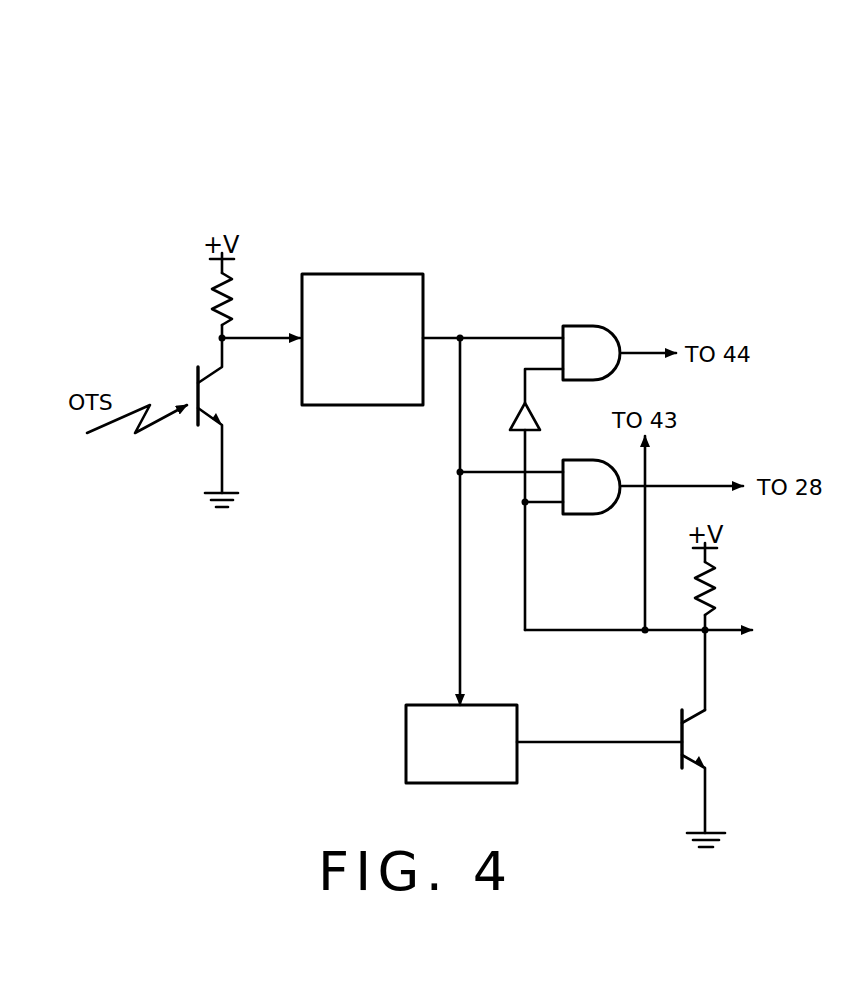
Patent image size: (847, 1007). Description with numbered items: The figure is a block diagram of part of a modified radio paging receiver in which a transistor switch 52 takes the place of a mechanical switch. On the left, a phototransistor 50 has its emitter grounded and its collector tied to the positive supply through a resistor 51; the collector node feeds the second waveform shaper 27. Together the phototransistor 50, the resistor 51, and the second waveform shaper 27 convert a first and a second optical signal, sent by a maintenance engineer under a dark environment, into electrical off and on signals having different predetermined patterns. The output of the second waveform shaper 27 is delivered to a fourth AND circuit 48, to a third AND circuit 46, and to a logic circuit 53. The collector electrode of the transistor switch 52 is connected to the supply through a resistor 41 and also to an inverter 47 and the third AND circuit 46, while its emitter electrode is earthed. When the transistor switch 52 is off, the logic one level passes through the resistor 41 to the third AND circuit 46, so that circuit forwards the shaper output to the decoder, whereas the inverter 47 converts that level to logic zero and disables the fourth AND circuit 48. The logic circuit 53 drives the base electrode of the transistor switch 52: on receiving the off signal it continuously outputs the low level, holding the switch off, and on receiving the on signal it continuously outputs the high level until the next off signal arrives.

The second waveform shaper 27 is at (340, 274).
The resistor 41 is at (720, 590).
The third AND circuit 46 is at (580, 514).
The inverter 47 is at (510, 420).
The fourth AND circuit 48 is at (578, 326).
The phototransistor 50 is at (205, 395).
The resistor 51 is at (208, 303).
The transistor switch 52 is at (698, 738).
The logic circuit 53 is at (406, 750).